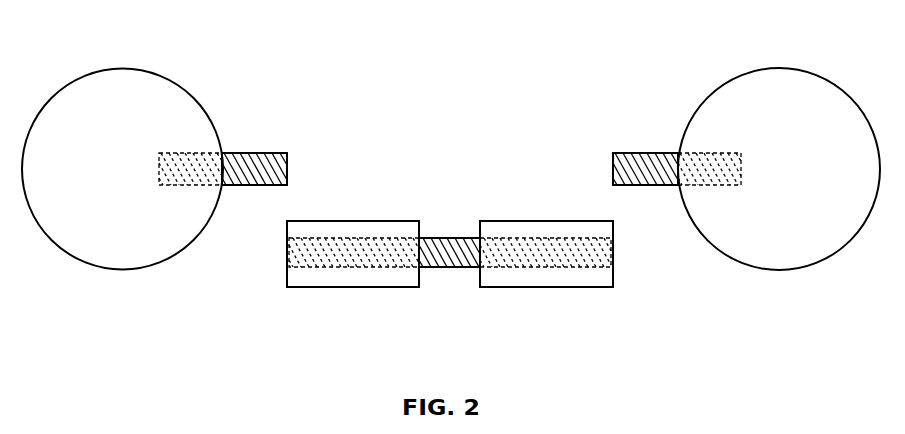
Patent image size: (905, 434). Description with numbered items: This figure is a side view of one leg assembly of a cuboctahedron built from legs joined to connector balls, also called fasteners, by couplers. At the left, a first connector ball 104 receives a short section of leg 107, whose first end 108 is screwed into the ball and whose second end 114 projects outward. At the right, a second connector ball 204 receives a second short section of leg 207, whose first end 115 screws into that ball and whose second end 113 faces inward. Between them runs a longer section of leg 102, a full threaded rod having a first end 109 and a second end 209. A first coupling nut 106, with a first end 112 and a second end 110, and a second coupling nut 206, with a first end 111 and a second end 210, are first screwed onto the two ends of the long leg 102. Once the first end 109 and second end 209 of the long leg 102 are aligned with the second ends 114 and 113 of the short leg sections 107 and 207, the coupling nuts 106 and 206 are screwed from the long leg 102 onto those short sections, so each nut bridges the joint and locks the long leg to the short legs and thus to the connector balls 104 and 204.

The longer section of leg 102 is at (460, 270).
The first connector ball 104 is at (126, 93).
The first coupling nut 106 is at (345, 230).
The short section of leg 107 is at (268, 162).
The first end of the short section of leg 108 is at (181, 187).
The first end of the longer section of leg 109 is at (292, 254).
The second end of the first coupling nut 110 is at (287, 228).
The first end of the second coupling nut 111 is at (470, 228).
The first end of the first coupling nut 112 is at (421, 290).
The second end of the short section of leg 207 113 is at (613, 165).
The second end of the short section of leg 107 114 is at (288, 157).
The first end of the second short section of leg 115 is at (741, 168).
The second connector ball 204 is at (773, 93).
The second coupling nut 206 is at (585, 275).
The second short section of leg 207 is at (633, 160).
The second end of the longer section of leg 209 is at (607, 253).
The second end of the second coupling nut 210 is at (613, 228).